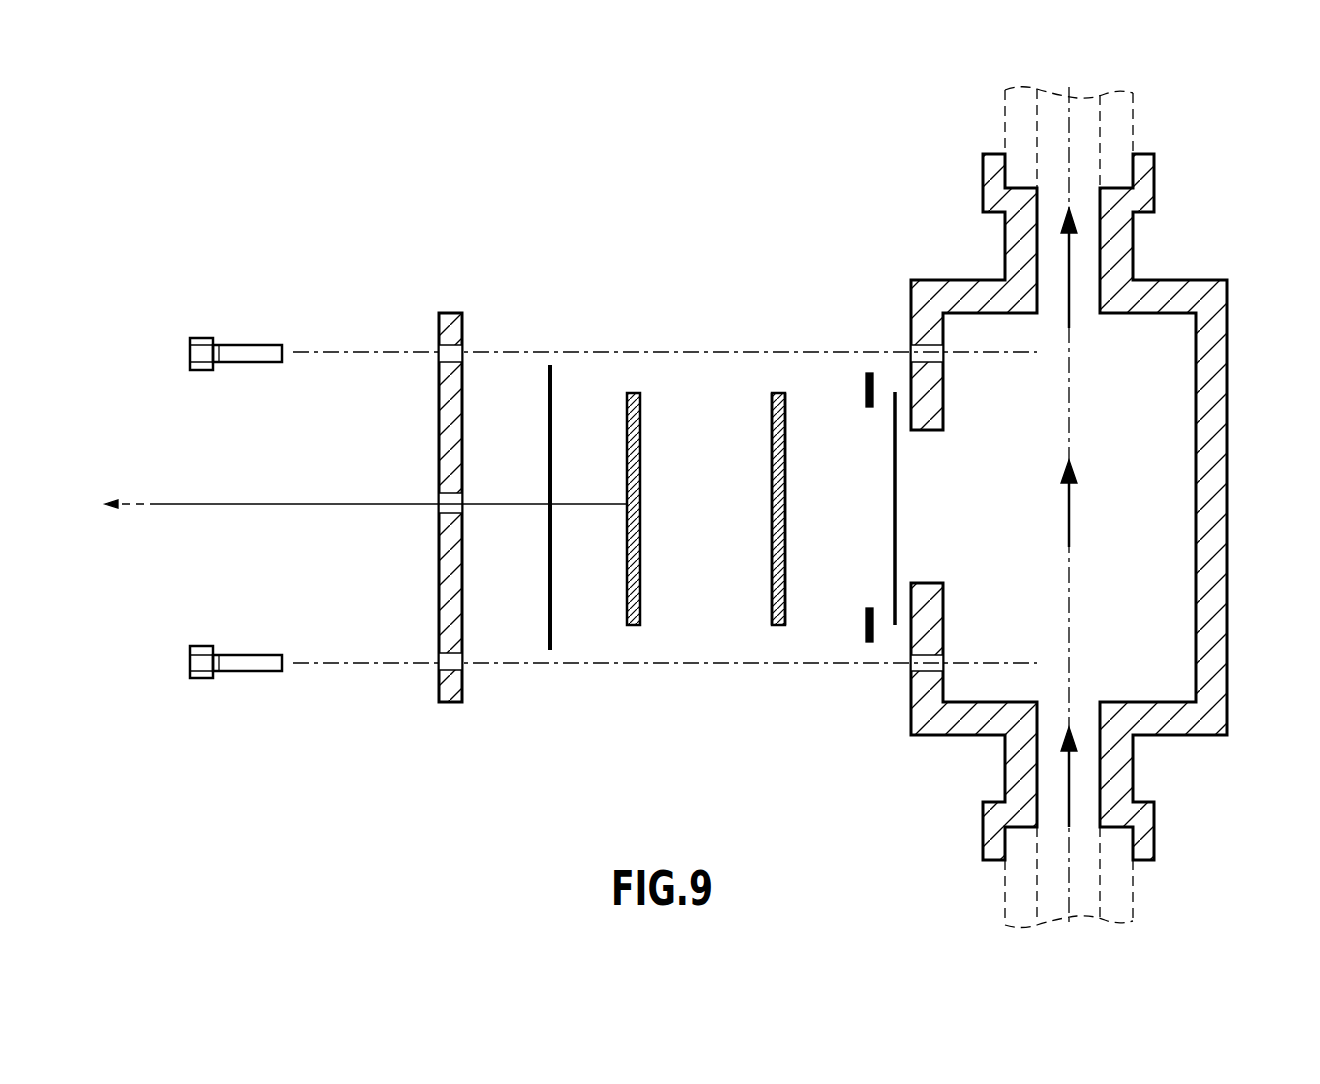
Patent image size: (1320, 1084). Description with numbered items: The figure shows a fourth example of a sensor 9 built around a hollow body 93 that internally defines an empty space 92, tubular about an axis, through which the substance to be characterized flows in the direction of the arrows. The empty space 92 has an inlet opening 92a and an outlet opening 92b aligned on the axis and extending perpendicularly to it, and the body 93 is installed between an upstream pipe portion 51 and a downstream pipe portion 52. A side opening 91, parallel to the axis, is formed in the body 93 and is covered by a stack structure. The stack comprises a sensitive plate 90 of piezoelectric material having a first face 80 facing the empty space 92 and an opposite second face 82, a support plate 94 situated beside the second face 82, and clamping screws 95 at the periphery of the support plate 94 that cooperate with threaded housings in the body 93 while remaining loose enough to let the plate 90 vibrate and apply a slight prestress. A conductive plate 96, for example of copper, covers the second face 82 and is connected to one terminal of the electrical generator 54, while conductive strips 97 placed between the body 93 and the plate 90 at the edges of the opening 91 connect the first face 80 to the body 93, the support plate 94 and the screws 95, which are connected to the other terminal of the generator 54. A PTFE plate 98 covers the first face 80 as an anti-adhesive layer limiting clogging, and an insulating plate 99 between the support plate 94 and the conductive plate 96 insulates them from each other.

The sensor 9 is at (690, 229).
The outlet pipe 51 is at (1125, 886).
The inlet pipe 52 is at (1125, 128).
The electrical generator 54 is at (351, 504).
The first face 80 is at (786, 538).
The second face 82 is at (772, 538).
The sensitive plate 90 is at (772, 419).
The side opening 91 is at (928, 493).
The empty space 92 is at (1128, 548).
The inlet opening 92a is at (1053, 829).
The outlet opening 92b is at (1053, 187).
The body 93 is at (1229, 560).
The support plate 94 is at (439, 424).
The clamping screws 95 is at (204, 338).
The conductive plate 96 is at (627, 421).
The conductive strips 97 is at (866, 389).
The PTFE plate 98 is at (897, 538).
The insulating plate 99 is at (549, 424).